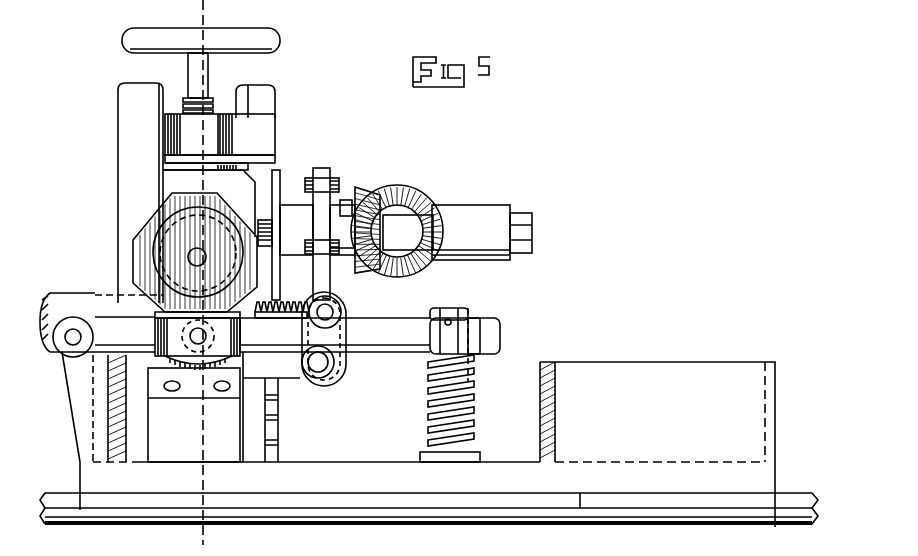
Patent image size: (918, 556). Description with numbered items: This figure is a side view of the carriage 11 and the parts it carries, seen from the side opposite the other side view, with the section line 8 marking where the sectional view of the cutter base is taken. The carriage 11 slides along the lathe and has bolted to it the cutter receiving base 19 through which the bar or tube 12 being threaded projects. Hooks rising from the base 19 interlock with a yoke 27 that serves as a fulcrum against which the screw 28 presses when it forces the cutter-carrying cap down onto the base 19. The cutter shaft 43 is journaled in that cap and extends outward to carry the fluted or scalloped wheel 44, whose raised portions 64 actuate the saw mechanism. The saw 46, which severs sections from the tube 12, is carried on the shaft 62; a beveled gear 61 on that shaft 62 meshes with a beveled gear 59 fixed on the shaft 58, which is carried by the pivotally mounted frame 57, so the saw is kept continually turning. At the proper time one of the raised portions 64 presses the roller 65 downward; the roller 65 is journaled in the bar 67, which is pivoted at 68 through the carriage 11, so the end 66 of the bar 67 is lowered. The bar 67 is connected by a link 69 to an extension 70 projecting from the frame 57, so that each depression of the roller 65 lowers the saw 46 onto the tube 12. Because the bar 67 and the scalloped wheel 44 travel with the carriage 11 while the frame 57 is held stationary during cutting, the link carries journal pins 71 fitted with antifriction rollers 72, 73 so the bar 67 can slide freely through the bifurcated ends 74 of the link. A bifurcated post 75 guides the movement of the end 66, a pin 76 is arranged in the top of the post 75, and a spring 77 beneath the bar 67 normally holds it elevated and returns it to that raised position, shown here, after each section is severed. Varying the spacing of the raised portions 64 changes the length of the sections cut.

The section line 8— 8 is at (203, 278).
The carriage 11 is at (429, 444).
The bar or tube 12 is at (97, 322).
The cutter receiving base 19 is at (129, 306).
The yoke 27 is at (219, 142).
The screw 28 is at (205, 108).
The shaft 43 is at (200, 254).
The fluted or scalloped wheel 44 is at (175, 212).
The saw 46 is at (276, 172).
The pivotally mounted frame 57 is at (515, 212).
The shaft 58 is at (408, 232).
The beveled gear 59 is at (408, 187).
The beveled gear 61 is at (358, 190).
The shaft 62 is at (432, 235).
The raised portions 64 is at (138, 218).
The roller 65 is at (185, 340).
The end of bar 66 is at (465, 331).
The bar 67 is at (420, 318).
The pivot 68 is at (70, 340).
The link 69 is at (321, 175).
The extension 70 is at (340, 178).
The journal pins 71 is at (318, 322).
The antifriction roller 72 is at (322, 386).
The antifriction roller 73 is at (340, 308).
The bifurcated ends 74 is at (308, 386).
The bifurcated post 75 is at (460, 338).
The pin 76 is at (450, 319).
The spring 77 is at (472, 388).